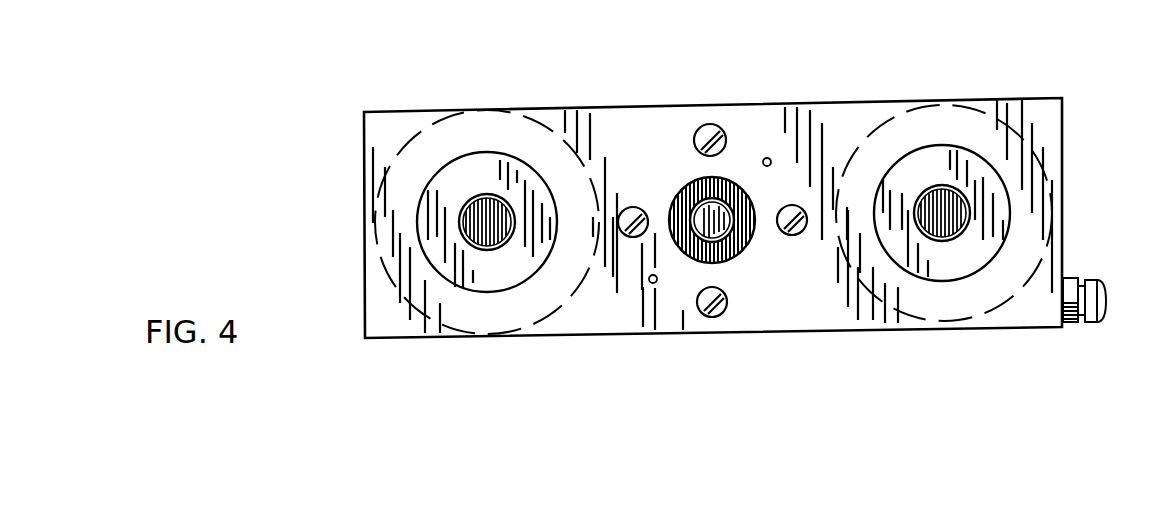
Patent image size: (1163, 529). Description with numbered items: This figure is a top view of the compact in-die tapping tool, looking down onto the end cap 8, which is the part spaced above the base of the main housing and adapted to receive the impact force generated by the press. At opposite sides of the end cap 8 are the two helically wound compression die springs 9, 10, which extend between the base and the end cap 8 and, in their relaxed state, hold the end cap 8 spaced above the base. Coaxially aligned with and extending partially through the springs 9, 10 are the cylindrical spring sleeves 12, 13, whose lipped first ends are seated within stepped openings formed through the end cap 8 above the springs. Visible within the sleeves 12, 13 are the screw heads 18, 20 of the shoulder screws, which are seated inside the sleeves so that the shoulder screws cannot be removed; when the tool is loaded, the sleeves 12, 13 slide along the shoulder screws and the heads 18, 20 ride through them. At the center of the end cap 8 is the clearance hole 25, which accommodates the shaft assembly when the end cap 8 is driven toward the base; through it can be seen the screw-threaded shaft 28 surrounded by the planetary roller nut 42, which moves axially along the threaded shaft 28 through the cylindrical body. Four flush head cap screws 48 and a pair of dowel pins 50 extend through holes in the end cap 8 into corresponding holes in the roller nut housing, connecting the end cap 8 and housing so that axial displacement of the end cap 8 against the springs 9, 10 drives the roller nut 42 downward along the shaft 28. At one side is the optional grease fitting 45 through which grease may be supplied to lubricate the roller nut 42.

The end cap 8 is at (681, 104).
The compression die spring 9 is at (488, 130).
The compression die spring 10 is at (888, 124).
The spring sleeve 12 is at (455, 182).
The spring sleeve 13 is at (937, 153).
The screw head 18 is at (507, 240).
The screw head 20 is at (943, 238).
The clearance hole 25 is at (677, 205).
The screw-threaded shaft 28 is at (690, 238).
The planetary roller nut 42 is at (702, 242).
The grease fitting 45 is at (1107, 300).
The flush head cap screws 48 is at (709, 124).
The dowel pins 50 is at (767, 158).